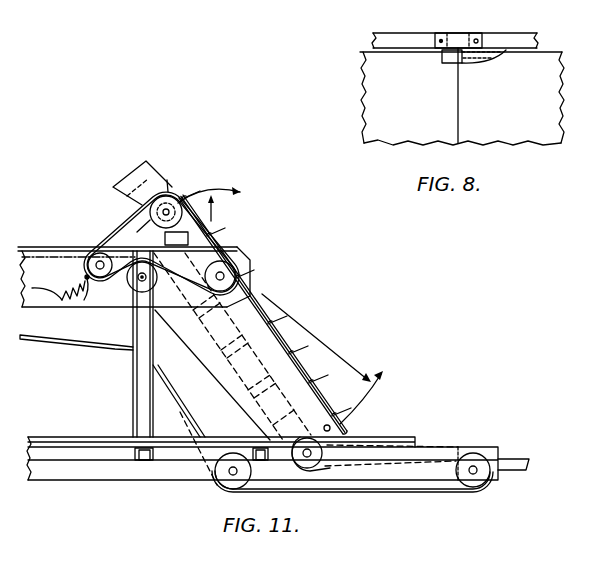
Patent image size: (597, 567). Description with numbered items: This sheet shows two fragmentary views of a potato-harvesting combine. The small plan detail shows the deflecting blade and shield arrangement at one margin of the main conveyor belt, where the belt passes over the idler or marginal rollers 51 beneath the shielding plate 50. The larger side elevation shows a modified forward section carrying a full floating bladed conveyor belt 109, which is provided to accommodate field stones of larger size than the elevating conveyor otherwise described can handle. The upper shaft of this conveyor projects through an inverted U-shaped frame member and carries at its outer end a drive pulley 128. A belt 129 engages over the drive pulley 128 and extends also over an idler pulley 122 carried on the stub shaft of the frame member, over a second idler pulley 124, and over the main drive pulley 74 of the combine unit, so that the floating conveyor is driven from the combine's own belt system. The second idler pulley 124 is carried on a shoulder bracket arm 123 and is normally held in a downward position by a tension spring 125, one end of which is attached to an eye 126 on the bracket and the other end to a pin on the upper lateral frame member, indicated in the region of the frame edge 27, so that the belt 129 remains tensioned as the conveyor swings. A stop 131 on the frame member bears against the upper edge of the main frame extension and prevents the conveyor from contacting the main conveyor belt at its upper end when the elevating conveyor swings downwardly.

In FIG. 11, the frame side wall 27 is at (32, 288).
In FIG. 8, the shielding plate 50 is at (501, 52).
In FIG. 8, the marginal rollers 51 is at (440, 57).
In FIG. 11, the main drive pulley 74 is at (130, 290).
In FIG. 11, the conveyor belt 109 is at (262, 310).
In FIG. 11, the idler pulley 122 is at (250, 265).
In FIG. 11, the shoulder bracket arm 123 is at (119, 237).
In FIG. 11, the second idler pulley 124 is at (88, 257).
In FIG. 11, the tension spring 125 is at (82, 298).
In FIG. 11, the eye 126 is at (85, 276).
In FIG. 11, the drive pulley 128 is at (164, 226).
In FIG. 11, the belt 129 is at (214, 213).
In FIG. 11, the stop 131 is at (118, 258).